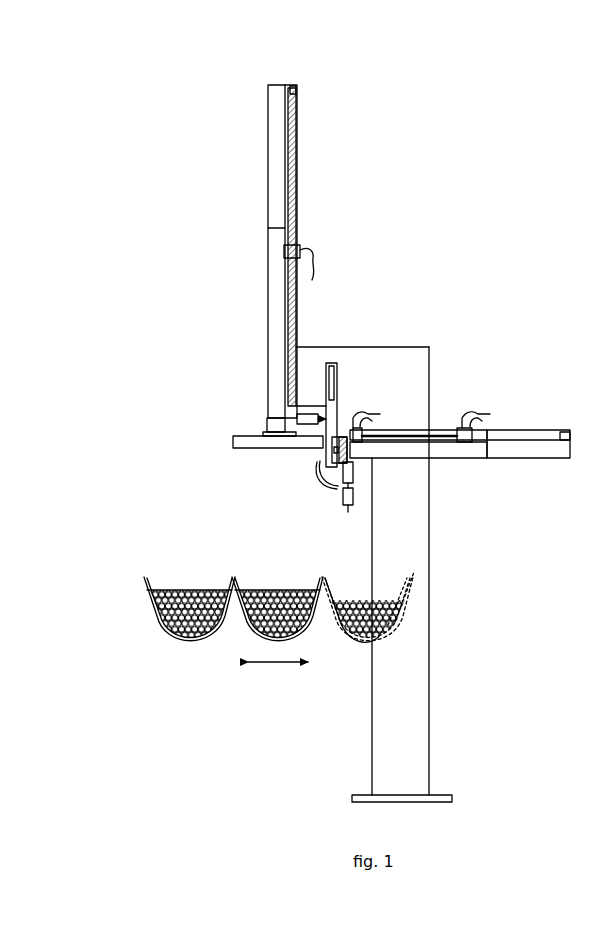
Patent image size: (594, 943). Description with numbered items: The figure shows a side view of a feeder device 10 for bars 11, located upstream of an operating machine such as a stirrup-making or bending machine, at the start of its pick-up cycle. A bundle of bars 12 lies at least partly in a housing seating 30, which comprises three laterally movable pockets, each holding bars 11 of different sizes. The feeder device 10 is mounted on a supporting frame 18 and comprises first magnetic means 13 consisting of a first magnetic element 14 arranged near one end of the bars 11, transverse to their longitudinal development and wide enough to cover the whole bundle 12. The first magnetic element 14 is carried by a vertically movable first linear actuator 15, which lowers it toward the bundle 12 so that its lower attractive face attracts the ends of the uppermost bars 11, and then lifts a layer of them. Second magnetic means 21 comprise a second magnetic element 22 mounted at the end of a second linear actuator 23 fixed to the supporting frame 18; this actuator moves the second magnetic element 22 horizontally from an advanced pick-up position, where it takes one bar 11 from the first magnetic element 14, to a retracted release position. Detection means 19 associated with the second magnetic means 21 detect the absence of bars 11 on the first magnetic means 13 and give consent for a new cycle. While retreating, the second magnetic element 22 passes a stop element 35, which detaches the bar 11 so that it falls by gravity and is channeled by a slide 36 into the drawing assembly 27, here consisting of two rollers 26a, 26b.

The feeder device 10 is at (455, 212).
The bars 11 is at (197, 590).
The bundle of bars 12 is at (168, 575).
The first magnetic means 13 is at (242, 402).
The first magnetic element 14 is at (243, 440).
The first linear actuator 15 is at (278, 282).
The supporting frame 18 is at (415, 353).
The detection means 19 is at (353, 415).
The second magnetic means 21 is at (457, 400).
The second magnetic element 22 is at (330, 454).
The second linear actuator 23 is at (455, 455).
The roller 26a is at (354, 473).
The roller 26b is at (349, 506).
The drawing assembly 27 is at (362, 487).
The housing seating 30 is at (170, 636).
The stop element 35 is at (333, 413).
The slide 36 is at (322, 482).